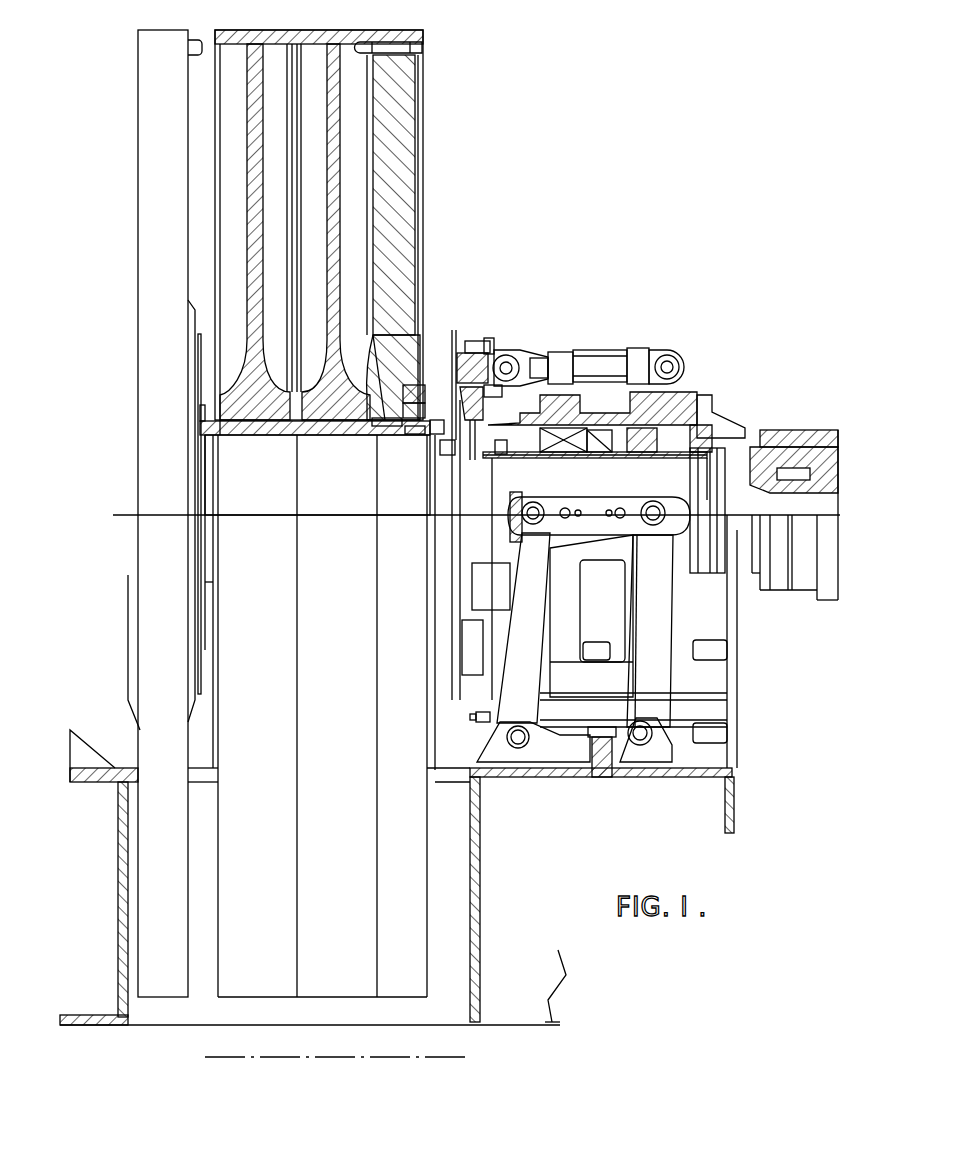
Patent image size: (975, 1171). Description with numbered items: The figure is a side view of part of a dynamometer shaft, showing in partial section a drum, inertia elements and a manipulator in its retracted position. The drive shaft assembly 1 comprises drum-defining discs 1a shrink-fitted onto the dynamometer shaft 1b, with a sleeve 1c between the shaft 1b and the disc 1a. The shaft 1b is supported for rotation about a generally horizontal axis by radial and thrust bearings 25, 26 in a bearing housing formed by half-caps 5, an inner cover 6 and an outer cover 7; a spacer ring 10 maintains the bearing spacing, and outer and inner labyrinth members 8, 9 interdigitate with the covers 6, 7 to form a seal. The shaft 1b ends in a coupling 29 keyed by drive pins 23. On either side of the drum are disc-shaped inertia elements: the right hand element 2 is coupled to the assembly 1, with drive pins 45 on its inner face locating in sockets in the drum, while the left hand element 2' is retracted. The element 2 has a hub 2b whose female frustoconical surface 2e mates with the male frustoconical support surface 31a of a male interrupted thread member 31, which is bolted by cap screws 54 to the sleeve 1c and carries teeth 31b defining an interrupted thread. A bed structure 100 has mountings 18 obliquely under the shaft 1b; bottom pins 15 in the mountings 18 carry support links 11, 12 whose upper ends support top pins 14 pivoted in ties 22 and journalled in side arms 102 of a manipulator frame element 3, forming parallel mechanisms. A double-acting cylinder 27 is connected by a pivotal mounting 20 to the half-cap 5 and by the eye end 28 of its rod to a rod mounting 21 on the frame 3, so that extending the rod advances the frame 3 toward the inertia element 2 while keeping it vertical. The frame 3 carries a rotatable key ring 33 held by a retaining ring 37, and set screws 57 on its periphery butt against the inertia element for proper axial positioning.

The drive shaft assembly 1 is at (331, 42).
The drum-defining disc 1a is at (258, 268).
The dynamometer shaft 1b is at (337, 501).
The sleeve 1c is at (330, 435).
The inertia element 2 is at (322, 526).
The inertia element 2' is at (165, 530).
The hub 2b is at (402, 300).
The female frustoconical surface 2e is at (386, 418).
The manipulator frame element 3 is at (468, 352).
The half-cap 5 is at (690, 400).
The inner cover 6 is at (541, 456).
The outer cover 7 is at (704, 420).
The outer labyrinth member 8 is at (690, 458).
The inner labyrinth member 9 is at (502, 460).
The spacer ring 10 is at (610, 463).
The support link 11 is at (536, 676).
The support link 12 is at (650, 676).
The top pin 14 is at (522, 515).
The bottom pin 15 is at (518, 750).
The mounting 18 is at (578, 750).
The pivotal mounting 20 is at (672, 362).
The rod mounting 21 is at (507, 355).
The tie 22 is at (592, 545).
The drive pin 23 is at (790, 432).
The radial and thrust bearing 25 is at (586, 456).
The radial and thrust bearing 26 is at (646, 456).
The cylinder 27 is at (600, 352).
The eye end 28 is at (531, 360).
The coupling 29 is at (775, 432).
The male interrupted thread member 31 is at (402, 445).
The male frustoconical support surface 31a is at (377, 440).
The teeth 31b is at (413, 446).
The key ring 33 is at (446, 452).
The retaining ring 37 is at (494, 392).
The drive pin 45 is at (413, 87).
The cap screw 54 is at (440, 440).
The set screw 57 is at (490, 340).
The bed structure 100 is at (550, 780).
The side arm 102 is at (572, 560).